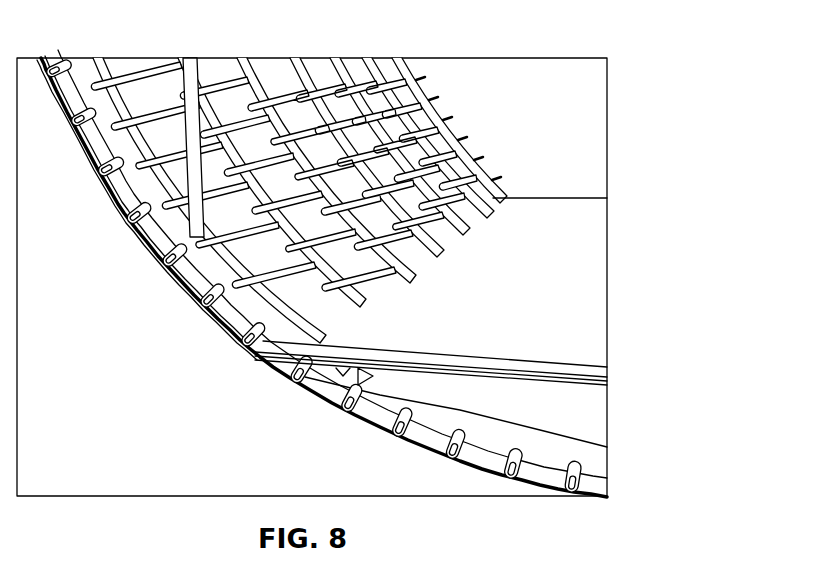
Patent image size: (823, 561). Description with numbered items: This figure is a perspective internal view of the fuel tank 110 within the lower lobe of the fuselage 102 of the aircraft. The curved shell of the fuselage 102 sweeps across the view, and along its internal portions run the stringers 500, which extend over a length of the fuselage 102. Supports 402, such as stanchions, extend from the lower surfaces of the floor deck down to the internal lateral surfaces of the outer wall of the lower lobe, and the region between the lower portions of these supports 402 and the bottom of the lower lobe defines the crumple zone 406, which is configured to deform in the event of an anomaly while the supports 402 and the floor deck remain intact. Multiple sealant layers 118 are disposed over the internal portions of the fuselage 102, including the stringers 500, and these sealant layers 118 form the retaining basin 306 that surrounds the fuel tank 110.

The fuselage 102 is at (363, 418).
The fuel tank 110 is at (700, 185).
The sealant layers 118 is at (560, 222).
The retaining basin 306 is at (570, 258).
The supports 402 is at (175, 72).
The crumple zone 406 is at (118, 288).
The stringers 500 is at (247, 341).